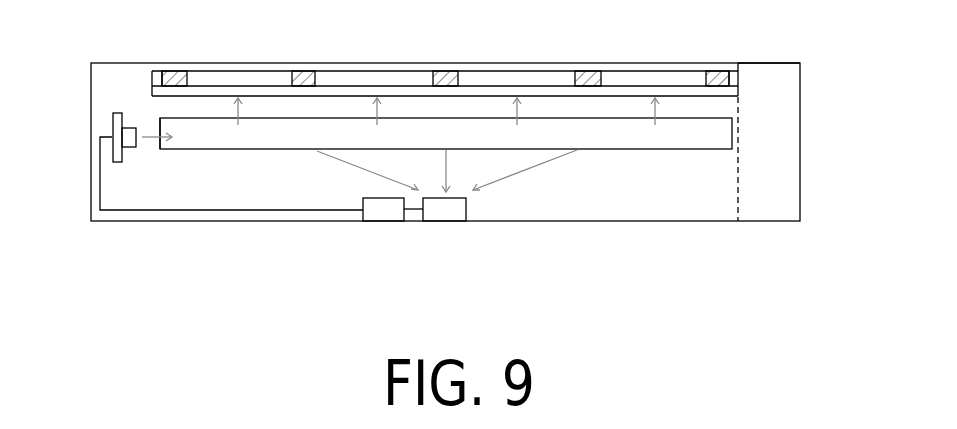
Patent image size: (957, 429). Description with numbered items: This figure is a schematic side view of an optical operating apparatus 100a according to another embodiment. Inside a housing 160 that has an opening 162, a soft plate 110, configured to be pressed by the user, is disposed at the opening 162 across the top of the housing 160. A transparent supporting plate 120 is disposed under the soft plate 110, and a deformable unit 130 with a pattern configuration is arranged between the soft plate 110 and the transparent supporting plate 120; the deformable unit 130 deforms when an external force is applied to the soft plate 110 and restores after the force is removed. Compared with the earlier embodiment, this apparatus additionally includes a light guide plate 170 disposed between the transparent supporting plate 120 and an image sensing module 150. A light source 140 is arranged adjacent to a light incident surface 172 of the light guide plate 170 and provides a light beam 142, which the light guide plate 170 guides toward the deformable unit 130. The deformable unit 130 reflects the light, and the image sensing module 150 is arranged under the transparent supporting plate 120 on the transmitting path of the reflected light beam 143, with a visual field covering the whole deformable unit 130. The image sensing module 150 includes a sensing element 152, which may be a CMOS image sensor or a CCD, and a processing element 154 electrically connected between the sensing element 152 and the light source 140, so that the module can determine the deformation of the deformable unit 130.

The optical operating apparatus 100a is at (724, 291).
The soft plate 110 is at (362, 67).
The transparent supporting plate 120 is at (735, 91).
The deformable unit 130 is at (722, 78).
The light source 140 is at (118, 113).
The light beam 142 is at (146, 140).
The reflected light beam 143 is at (447, 172).
The image sensing module 150 is at (348, 282).
The sensing element 152 is at (447, 218).
The processing element 154 is at (379, 218).
The housing 160 is at (800, 187).
The opening 162 is at (733, 63).
The light guide plate 170 is at (723, 136).
The light incident surface 172 is at (158, 125).